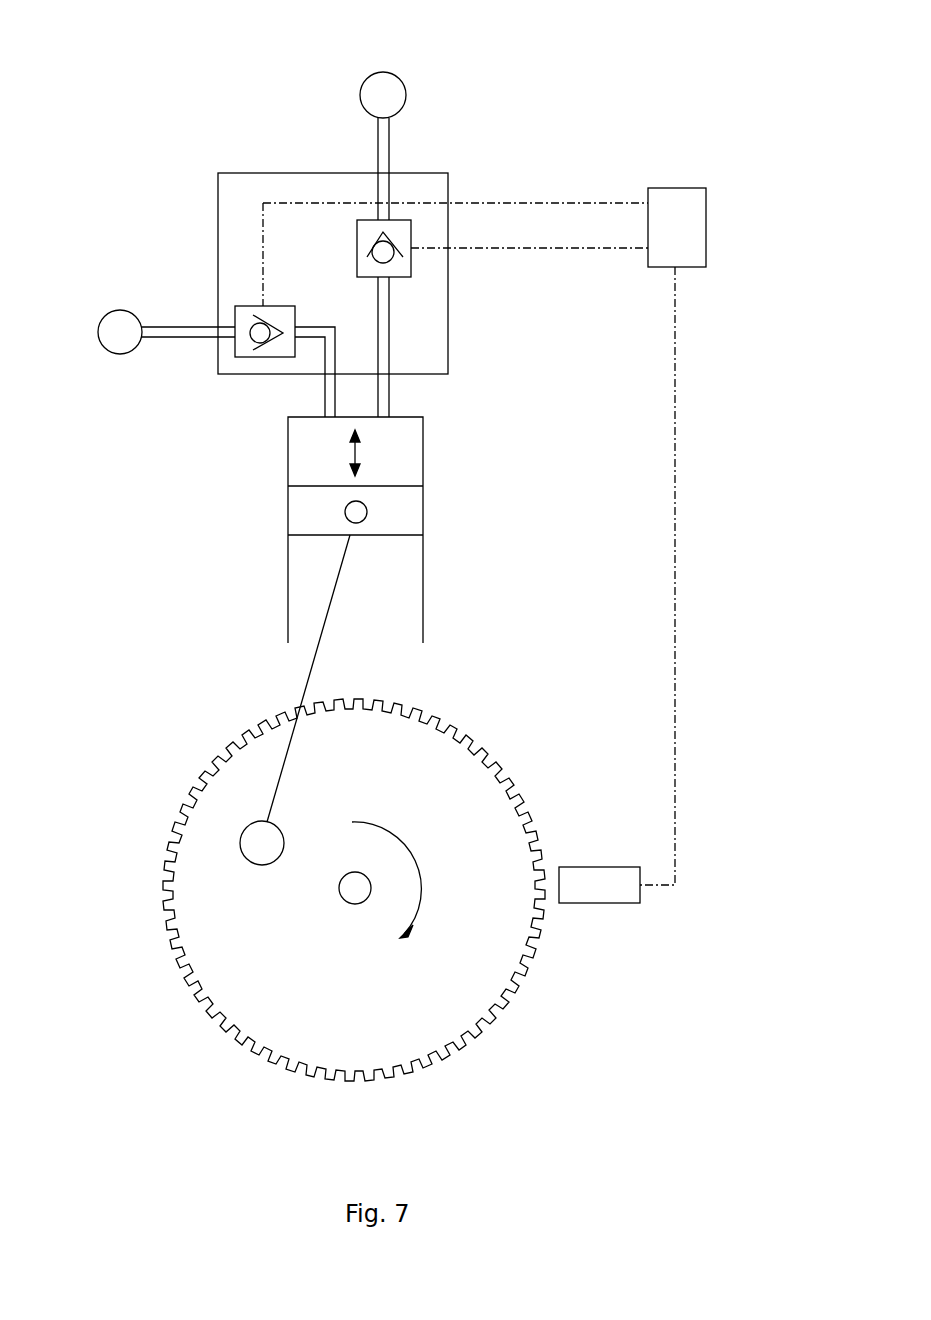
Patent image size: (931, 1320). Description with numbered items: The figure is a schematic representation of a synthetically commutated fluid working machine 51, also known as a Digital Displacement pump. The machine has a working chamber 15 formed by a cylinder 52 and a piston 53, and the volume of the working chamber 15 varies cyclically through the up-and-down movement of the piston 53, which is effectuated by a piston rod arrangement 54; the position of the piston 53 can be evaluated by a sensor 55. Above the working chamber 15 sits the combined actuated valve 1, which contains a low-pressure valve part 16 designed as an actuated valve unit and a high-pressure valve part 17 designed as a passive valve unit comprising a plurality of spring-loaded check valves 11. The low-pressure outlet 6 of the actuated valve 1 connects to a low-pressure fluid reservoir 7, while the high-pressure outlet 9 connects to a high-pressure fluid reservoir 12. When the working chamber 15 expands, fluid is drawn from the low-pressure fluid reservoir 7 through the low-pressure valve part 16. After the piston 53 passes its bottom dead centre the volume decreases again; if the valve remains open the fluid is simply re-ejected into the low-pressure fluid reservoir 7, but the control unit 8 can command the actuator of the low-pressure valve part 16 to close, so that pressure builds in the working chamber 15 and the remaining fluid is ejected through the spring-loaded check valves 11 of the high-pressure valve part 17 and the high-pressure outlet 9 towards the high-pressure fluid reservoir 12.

The actuated valve 1 is at (240, 173).
The low-pressure outlet 6 is at (392, 142).
The low-pressure fluid reservoir 7 is at (406, 97).
The control unit 8 is at (706, 228).
The high-pressure outlet 9 is at (180, 327).
The spring-loaded check valves 11 is at (232, 350).
The high-pressure fluid reservoir 12 is at (120, 310).
The working chamber 15 is at (400, 442).
The low-pressure valve part 16 is at (357, 245).
The high-pressure valve part 17 is at (252, 306).
The synthetically commutated fluid working machine 51 is at (660, 130).
The cylinder 52 is at (288, 455).
The piston 53 is at (400, 512).
The piston rod arrangement 54 is at (527, 760).
The sensor 55 is at (598, 867).